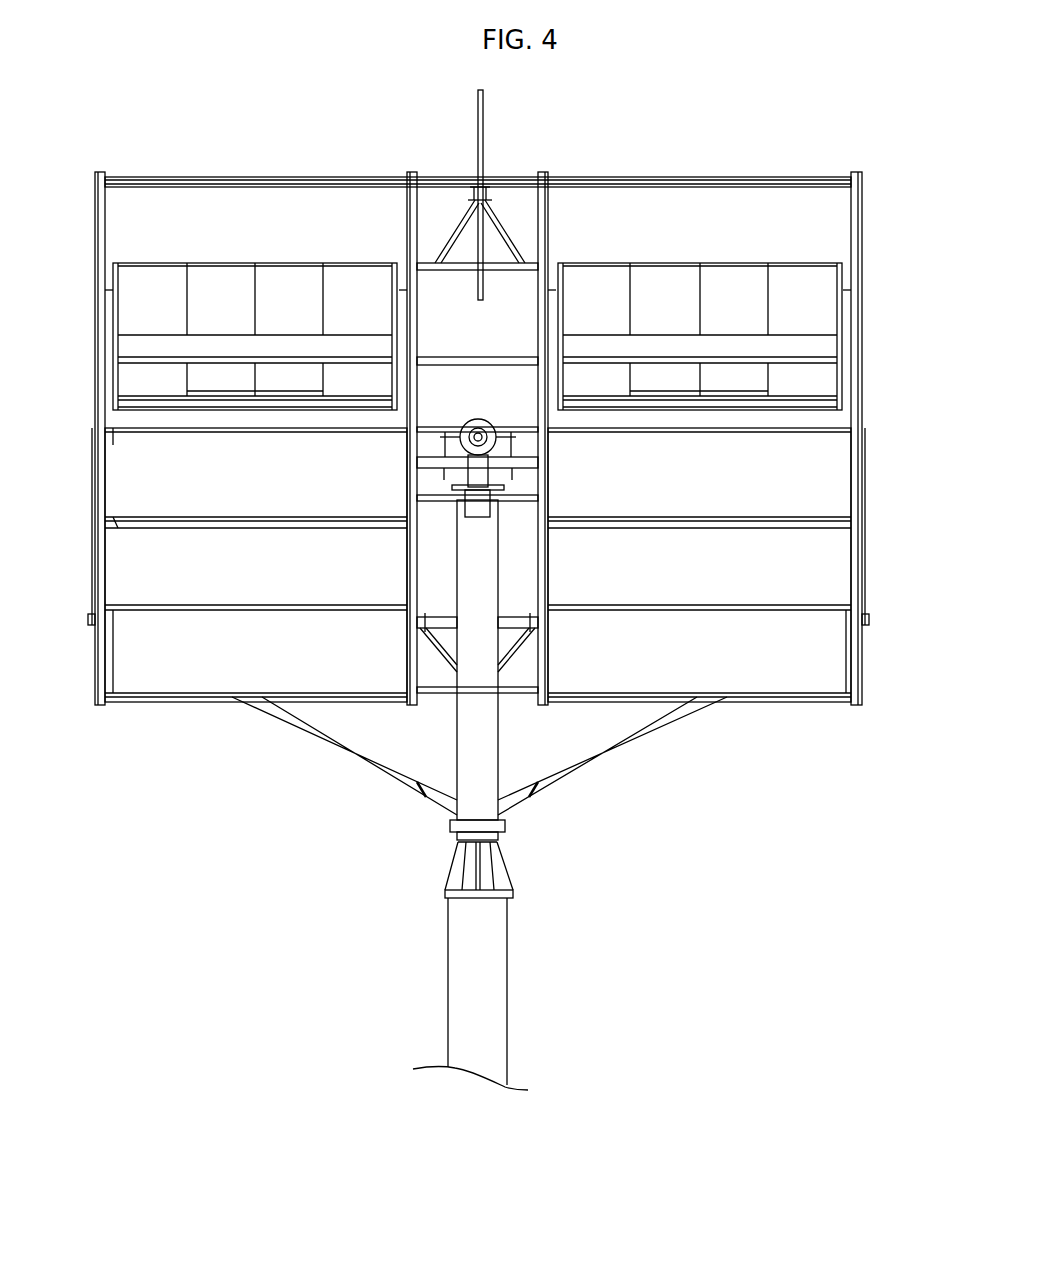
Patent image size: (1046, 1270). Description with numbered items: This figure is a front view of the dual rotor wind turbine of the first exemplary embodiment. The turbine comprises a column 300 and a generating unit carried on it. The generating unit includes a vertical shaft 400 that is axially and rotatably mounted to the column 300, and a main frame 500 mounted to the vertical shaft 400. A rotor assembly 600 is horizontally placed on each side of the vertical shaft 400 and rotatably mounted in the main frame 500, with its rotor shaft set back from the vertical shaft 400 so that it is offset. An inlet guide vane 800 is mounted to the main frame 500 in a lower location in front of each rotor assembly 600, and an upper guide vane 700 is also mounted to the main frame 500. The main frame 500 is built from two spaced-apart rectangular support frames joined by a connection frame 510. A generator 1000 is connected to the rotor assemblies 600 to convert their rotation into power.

The column 300 is at (447, 862).
The vertical shaft 400 is at (444, 748).
The main frame 500 is at (866, 231).
The connection frame 510 is at (442, 697).
The rotor assembly 600 is at (613, 251).
The upper guide vane 700 is at (774, 172).
The inlet guide vane 800 is at (757, 717).
The generator 1000 is at (461, 406).